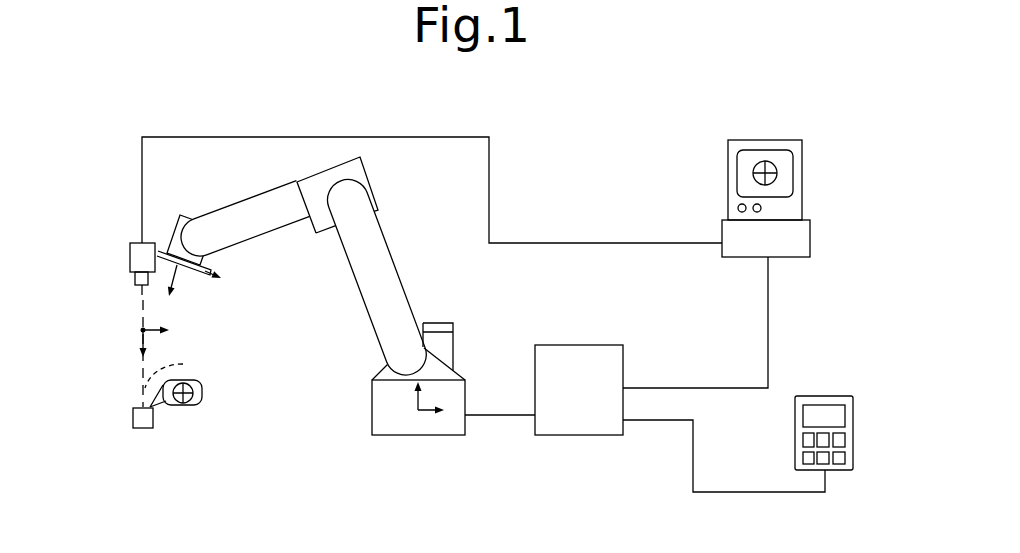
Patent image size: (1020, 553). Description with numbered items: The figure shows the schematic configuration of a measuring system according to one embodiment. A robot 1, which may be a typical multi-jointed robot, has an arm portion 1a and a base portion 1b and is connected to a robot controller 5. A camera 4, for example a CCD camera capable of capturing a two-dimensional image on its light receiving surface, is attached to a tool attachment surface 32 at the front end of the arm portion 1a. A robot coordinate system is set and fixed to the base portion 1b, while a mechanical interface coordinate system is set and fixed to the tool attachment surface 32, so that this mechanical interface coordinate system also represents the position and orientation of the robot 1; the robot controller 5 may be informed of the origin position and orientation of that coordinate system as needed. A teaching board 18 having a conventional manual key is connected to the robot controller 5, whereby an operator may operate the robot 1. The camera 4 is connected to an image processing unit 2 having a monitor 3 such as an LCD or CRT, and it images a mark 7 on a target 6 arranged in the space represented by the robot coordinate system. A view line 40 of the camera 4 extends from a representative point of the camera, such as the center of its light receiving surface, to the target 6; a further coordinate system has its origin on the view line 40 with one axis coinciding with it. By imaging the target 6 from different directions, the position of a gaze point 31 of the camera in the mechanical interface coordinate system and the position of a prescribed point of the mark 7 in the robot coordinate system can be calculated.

The robot 1 is at (409, 264).
The arm portion 1a is at (282, 218).
The base portion 1b is at (452, 425).
The image processing unit 2 is at (821, 170).
The monitor 3 is at (770, 152).
The camera 4 is at (130, 260).
The robot controller 5 is at (615, 375).
The target 6 is at (142, 428).
The mark 7 is at (216, 391).
The teaching board 18 is at (817, 395).
The gaze point 31 is at (142, 329).
The tool attachment surface 32 is at (162, 252).
The view line 40 is at (177, 368).